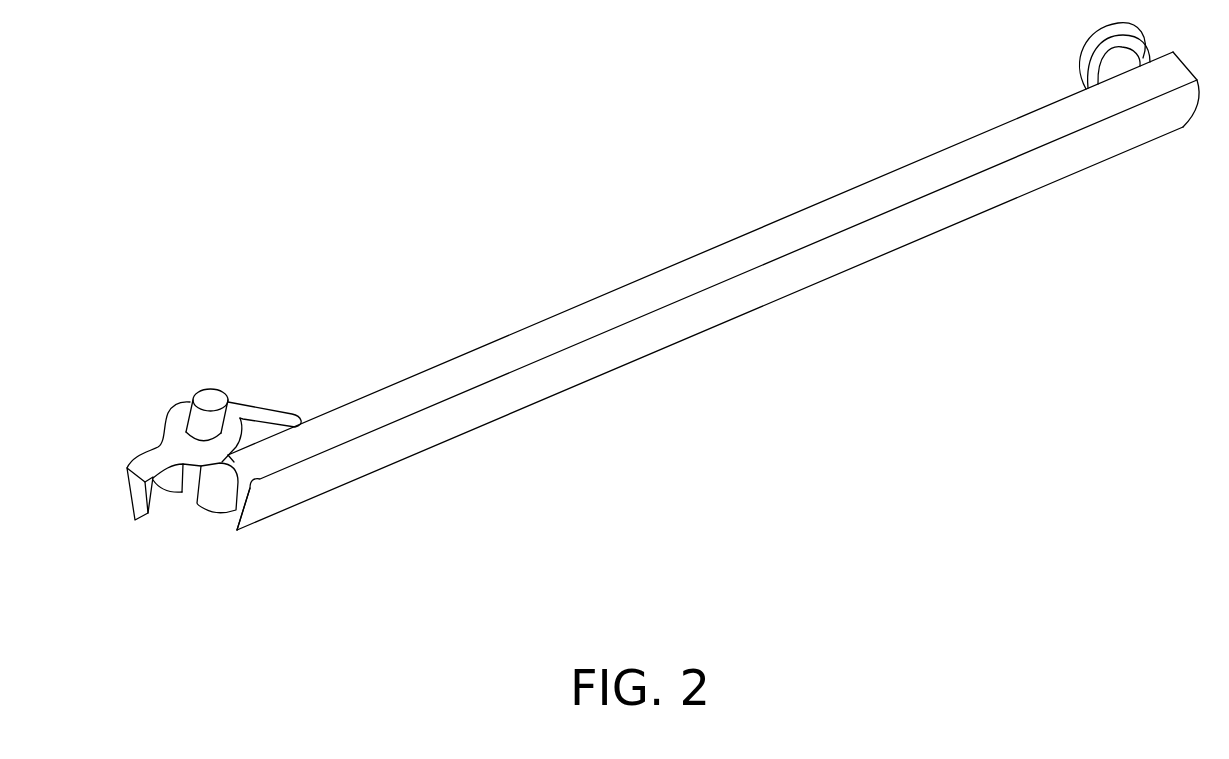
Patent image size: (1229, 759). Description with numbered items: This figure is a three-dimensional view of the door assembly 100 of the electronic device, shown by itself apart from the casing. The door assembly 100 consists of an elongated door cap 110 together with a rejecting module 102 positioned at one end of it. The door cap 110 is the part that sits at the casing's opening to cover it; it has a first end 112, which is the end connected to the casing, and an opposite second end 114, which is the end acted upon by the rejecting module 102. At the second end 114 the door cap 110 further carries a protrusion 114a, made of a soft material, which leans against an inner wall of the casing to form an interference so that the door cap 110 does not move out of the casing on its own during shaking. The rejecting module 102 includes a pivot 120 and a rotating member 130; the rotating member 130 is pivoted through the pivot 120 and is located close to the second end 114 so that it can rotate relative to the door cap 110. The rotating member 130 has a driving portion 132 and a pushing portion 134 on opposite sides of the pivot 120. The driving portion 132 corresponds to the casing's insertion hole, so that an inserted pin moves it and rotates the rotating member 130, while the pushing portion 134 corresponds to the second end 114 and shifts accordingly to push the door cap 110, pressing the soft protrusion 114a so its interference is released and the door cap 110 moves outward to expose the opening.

The door assembly 100 is at (918, 340).
The rejecting module 102 is at (153, 303).
The door cap 110 is at (700, 317).
The first end 112 is at (1167, 110).
The second end 114 is at (263, 510).
The protrusion 114a is at (202, 497).
The pivot 120 is at (210, 400).
The rotating member 130 is at (173, 422).
The driving portion 132 is at (130, 500).
The pushing portion 134 is at (279, 417).